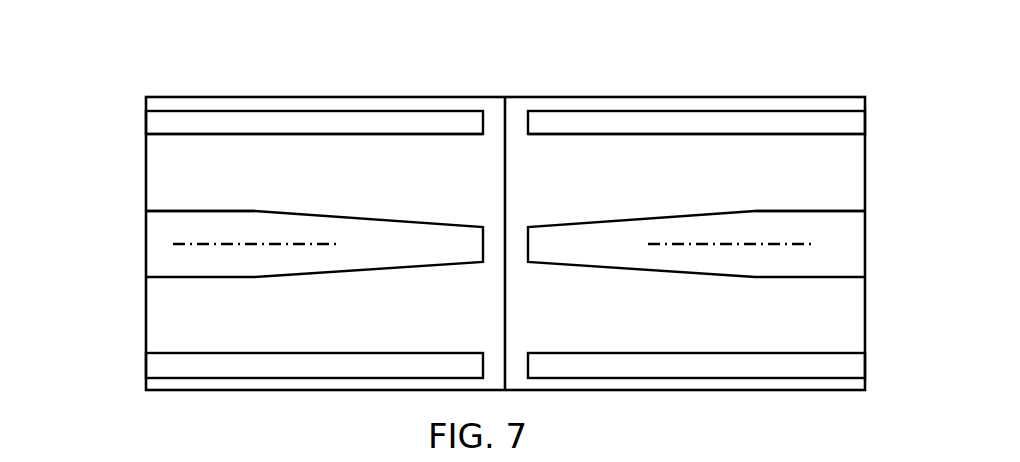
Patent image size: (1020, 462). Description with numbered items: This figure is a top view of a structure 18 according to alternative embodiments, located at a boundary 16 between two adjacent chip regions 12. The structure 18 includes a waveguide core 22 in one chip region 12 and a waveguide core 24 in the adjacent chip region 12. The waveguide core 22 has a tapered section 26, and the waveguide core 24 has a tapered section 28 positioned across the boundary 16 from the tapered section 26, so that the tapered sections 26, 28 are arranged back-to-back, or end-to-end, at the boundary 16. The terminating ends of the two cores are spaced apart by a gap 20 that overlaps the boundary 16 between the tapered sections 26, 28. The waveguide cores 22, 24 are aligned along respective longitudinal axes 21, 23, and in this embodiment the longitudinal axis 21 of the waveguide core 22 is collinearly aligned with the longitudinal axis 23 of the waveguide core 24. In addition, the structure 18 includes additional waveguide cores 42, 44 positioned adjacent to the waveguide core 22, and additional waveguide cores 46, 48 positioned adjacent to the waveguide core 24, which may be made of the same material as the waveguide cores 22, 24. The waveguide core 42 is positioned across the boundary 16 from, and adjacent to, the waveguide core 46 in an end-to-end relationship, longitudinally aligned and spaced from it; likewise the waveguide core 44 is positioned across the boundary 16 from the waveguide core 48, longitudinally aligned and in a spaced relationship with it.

The structure 18 is at (148, 77).
The gap 20 is at (483, 55).
The boundary 16 is at (505, 324).
The chip region 12 is at (176, 189).
The waveguide core 42 is at (180, 127).
The waveguide core 44 is at (176, 368).
The waveguide core 46 is at (818, 127).
The waveguide core 48 is at (835, 366).
The waveguide core 22 is at (178, 231).
The waveguide core 24 is at (827, 256).
The longitudinal axis 21 is at (297, 244).
The longitudinal axis 23 is at (712, 244).
The tapered section 26 is at (265, 198).
The tapered section 28 is at (528, 198).